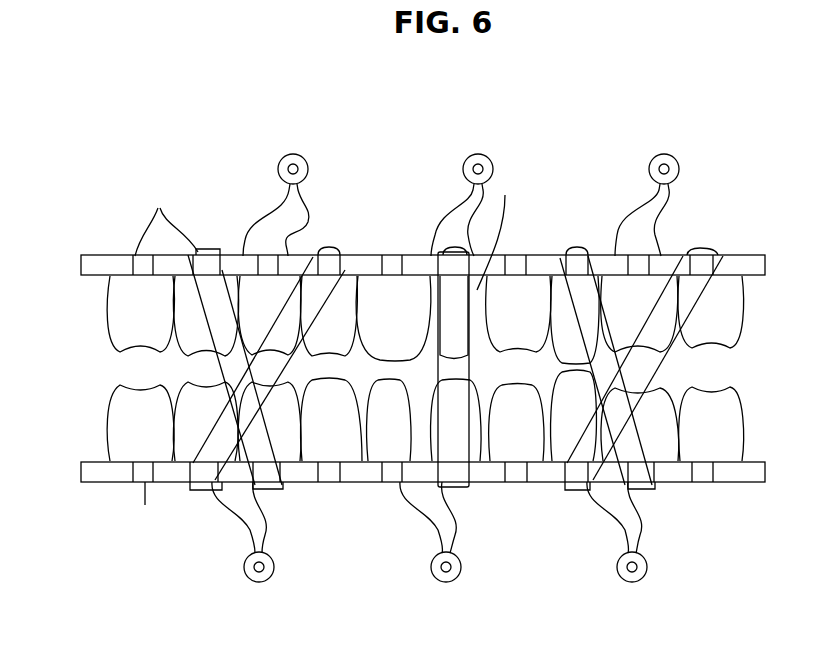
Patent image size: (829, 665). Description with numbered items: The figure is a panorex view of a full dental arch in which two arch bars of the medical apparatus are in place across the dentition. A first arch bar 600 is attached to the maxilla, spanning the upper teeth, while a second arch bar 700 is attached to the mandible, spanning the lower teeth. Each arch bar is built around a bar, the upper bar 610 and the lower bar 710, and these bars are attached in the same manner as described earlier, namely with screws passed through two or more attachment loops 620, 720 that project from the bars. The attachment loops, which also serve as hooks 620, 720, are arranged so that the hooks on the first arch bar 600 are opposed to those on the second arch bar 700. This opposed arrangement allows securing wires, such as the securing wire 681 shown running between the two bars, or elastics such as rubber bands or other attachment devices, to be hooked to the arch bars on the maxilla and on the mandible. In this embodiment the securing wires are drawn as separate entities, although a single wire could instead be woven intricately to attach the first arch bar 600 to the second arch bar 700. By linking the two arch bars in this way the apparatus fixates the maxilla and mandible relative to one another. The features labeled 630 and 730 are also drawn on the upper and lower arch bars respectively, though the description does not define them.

The first arch bar 600 is at (349, 240).
The bar 610 is at (727, 263).
The attachment loop 620 is at (280, 162).
The upper Y-shaped wire 630 is at (156, 206).
The securing wire 681 is at (485, 319).
The second arch bar 700 is at (335, 530).
The bar 710 is at (733, 478).
The attachment loop 720 is at (617, 567).
The lower left ring wire 730 is at (197, 487).